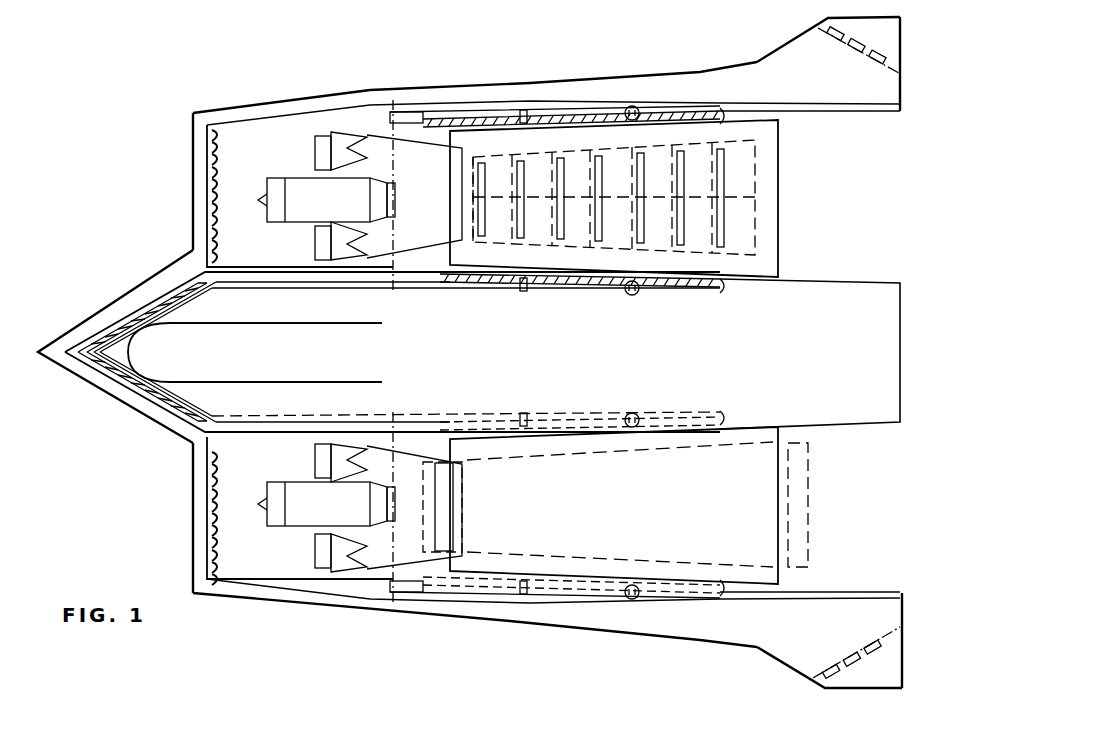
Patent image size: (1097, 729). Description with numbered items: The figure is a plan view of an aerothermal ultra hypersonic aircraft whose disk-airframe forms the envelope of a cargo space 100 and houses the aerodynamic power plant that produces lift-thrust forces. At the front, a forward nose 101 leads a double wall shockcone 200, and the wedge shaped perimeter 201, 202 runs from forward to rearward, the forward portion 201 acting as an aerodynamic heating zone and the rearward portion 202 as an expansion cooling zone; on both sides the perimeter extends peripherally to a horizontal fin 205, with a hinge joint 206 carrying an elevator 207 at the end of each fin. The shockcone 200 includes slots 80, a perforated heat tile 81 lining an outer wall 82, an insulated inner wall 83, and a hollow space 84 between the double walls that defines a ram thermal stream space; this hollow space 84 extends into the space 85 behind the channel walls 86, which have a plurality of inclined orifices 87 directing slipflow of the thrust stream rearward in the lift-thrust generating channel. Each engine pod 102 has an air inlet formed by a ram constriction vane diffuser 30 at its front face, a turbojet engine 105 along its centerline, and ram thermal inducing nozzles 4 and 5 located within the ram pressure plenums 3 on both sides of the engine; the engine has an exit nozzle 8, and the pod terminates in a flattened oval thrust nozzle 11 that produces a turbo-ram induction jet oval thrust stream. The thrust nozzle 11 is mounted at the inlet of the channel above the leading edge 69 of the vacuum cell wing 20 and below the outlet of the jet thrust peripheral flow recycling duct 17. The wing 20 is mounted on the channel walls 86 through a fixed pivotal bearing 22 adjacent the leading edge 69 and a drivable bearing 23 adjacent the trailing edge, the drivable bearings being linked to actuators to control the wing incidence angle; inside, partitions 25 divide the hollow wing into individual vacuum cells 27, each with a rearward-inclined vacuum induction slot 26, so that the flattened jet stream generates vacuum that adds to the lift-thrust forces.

The ram pressure plenum 3 is at (279, 156).
The ram thermal inducing nozzle 4 is at (312, 152).
The ram thermal inducing nozzle 5 is at (342, 128).
The exit nozzle 8 is at (390, 200).
The flattened oval thrust nozzle 11 is at (458, 205).
The jet thrust peripheral flow recycling duct 17 is at (622, 455).
The vacuum cell wing 20 is at (770, 242).
The pivotal bearing 22 is at (524, 108).
The drivable bearing 23 is at (630, 106).
The partition 25 is at (715, 172).
The vacuum induction slot 26 is at (728, 210).
The vacuum cell 27 is at (745, 216).
The ram constriction vane diffuser 30 is at (215, 197).
The leading edge 69 is at (447, 266).
The slot 80 is at (140, 400).
The perforated heat tile 81 is at (100, 370).
The outer wall 82 is at (165, 415).
The insulated inner wall 83 is at (219, 286).
The hollow space 84 is at (185, 407).
The space behind channel walls 85 is at (492, 110).
The channel wall 86 is at (800, 113).
The inclined orifice 87 is at (440, 103).
The cargo space 100 is at (350, 355).
The forward nose 101 is at (40, 344).
The engine pod 102 is at (297, 580).
The turbojet engine 105 is at (323, 203).
The shockcone 200 is at (150, 312).
The wedge shaped perimeter 201 is at (193, 160).
The wedge shaped perimeter 202 is at (725, 78).
The horizontal fin 205 is at (818, 60).
The hinge joint 206 is at (880, 58).
The elevator 207 is at (845, 27).